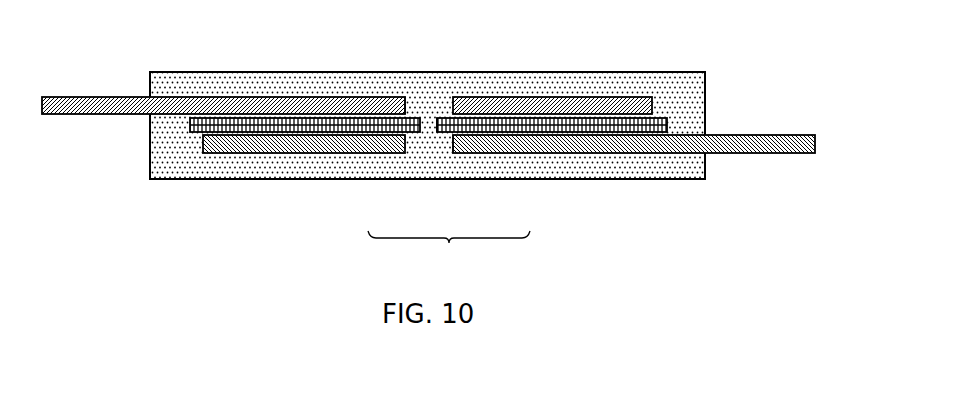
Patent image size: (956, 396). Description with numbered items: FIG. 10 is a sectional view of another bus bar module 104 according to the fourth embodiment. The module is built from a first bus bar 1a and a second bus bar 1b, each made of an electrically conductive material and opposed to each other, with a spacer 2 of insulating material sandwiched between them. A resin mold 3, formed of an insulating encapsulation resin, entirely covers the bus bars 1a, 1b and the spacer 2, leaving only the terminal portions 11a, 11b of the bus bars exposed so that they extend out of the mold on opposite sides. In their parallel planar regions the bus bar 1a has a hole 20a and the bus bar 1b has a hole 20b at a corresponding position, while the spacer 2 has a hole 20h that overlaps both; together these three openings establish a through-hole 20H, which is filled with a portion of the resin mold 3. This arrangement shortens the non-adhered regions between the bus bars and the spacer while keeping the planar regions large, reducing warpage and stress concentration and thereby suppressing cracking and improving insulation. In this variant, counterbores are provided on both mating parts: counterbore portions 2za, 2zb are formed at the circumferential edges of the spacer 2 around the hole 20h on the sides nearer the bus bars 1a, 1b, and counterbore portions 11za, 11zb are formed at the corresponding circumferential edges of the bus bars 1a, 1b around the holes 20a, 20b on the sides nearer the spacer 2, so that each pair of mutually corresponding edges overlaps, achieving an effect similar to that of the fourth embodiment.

The bus bar module 104 is at (437, 139).
The resin mold 3 is at (477, 82).
The spacer 2 is at (660, 128).
The first bus bar 1a is at (592, 153).
The second bus bar 1b is at (540, 96).
The terminal portion 11a is at (753, 153).
The terminal portion 11b is at (107, 96).
The counterbore portion 2za is at (440, 133).
The counterbore portion 2zb is at (437, 118).
The counterbore portion 11za is at (453, 145).
The counterbore portion 11zb is at (446, 117).
The hole 20a is at (410, 135).
The hole 20h is at (429, 133).
The hole 20b is at (447, 136).
The through-hole 20H is at (449, 253).